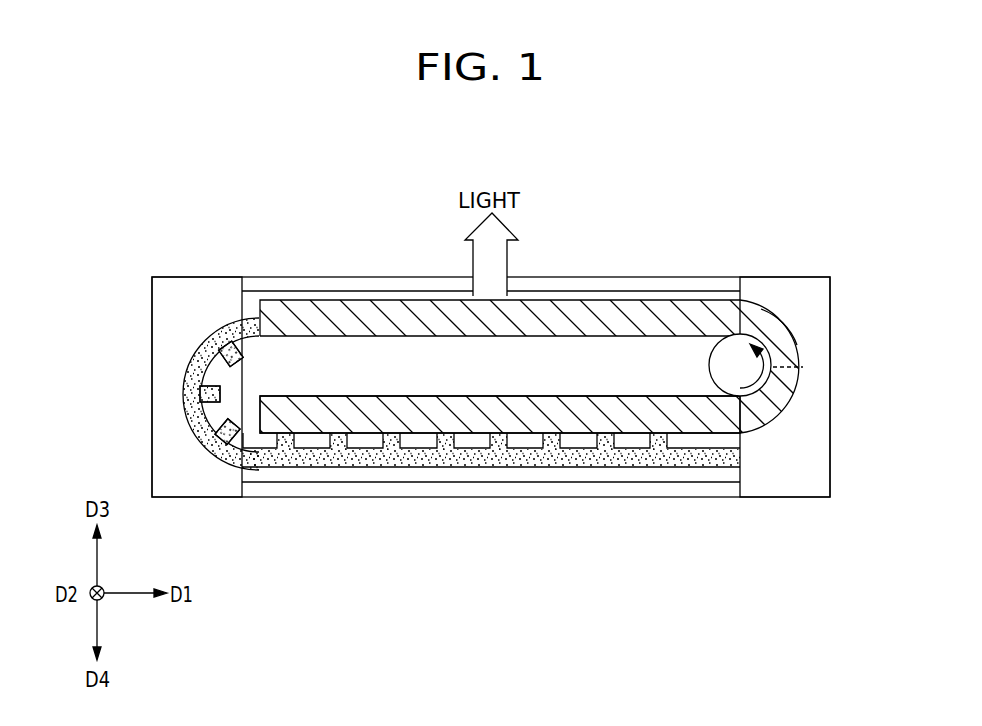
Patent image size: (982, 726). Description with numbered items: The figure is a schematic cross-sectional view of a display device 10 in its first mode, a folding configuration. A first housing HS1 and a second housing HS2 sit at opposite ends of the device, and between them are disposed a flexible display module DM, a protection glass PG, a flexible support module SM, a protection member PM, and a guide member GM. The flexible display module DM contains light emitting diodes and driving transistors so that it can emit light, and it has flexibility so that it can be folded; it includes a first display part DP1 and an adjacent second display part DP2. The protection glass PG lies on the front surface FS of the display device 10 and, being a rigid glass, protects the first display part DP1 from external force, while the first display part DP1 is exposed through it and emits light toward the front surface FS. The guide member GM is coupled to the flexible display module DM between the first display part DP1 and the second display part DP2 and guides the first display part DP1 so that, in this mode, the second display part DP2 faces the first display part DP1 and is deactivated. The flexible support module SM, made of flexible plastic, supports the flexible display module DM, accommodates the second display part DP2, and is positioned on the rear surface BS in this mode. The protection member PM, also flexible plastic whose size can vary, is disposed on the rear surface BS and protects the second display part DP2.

The display device 10 is at (504, 150).
The first housing HS1 is at (190, 285).
The second housing HS2 is at (792, 285).
The protection glass PG is at (345, 285).
The front surface FS is at (790, 182).
The rear surface BS is at (787, 581).
The flexible display module DM is at (483, 383).
The first display part DP1 is at (270, 311).
The second display part DP2 is at (268, 412).
The guide member GM is at (767, 351).
The flexible support module SM is at (344, 460).
The protection member PM is at (439, 488).